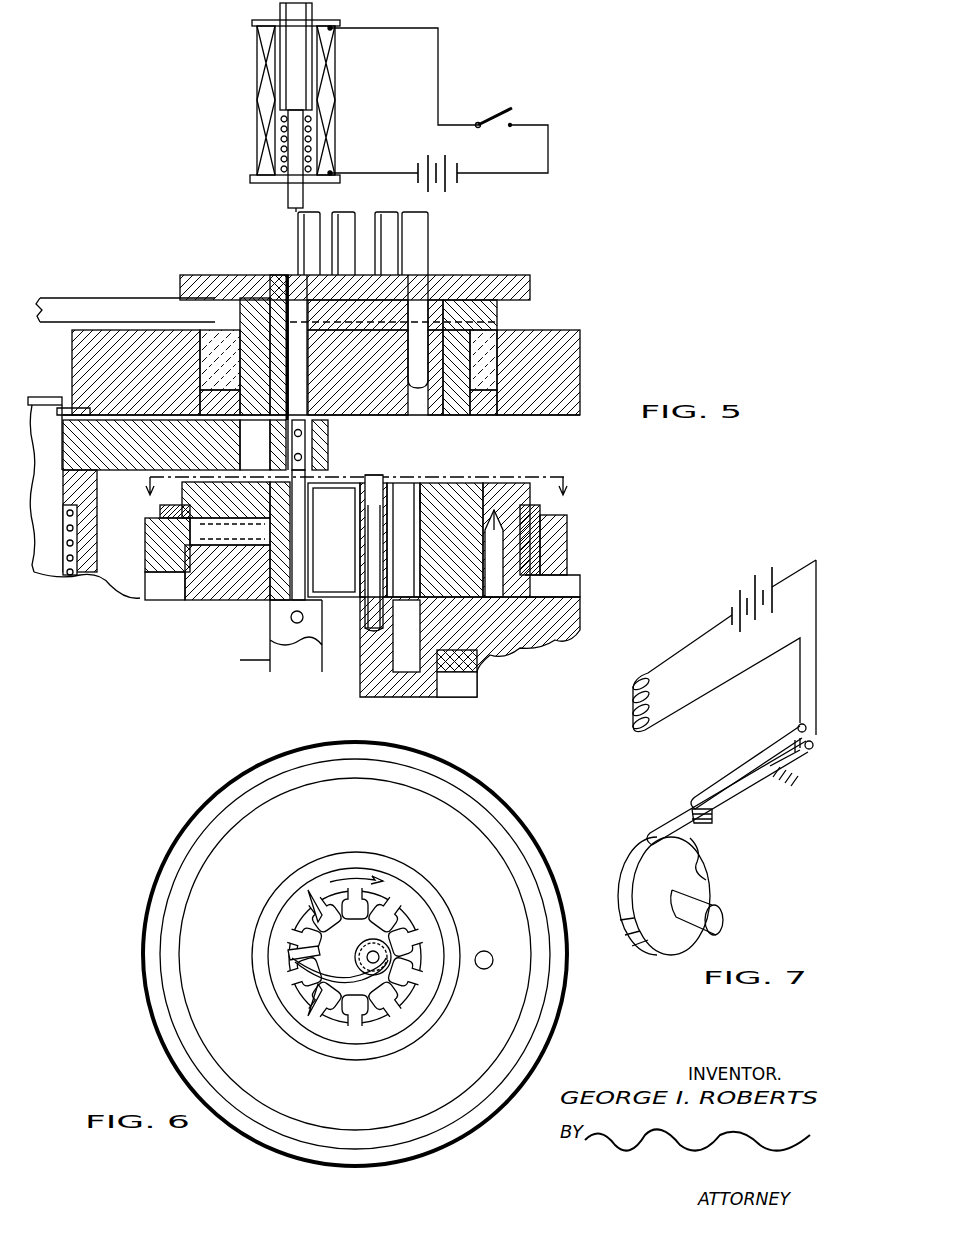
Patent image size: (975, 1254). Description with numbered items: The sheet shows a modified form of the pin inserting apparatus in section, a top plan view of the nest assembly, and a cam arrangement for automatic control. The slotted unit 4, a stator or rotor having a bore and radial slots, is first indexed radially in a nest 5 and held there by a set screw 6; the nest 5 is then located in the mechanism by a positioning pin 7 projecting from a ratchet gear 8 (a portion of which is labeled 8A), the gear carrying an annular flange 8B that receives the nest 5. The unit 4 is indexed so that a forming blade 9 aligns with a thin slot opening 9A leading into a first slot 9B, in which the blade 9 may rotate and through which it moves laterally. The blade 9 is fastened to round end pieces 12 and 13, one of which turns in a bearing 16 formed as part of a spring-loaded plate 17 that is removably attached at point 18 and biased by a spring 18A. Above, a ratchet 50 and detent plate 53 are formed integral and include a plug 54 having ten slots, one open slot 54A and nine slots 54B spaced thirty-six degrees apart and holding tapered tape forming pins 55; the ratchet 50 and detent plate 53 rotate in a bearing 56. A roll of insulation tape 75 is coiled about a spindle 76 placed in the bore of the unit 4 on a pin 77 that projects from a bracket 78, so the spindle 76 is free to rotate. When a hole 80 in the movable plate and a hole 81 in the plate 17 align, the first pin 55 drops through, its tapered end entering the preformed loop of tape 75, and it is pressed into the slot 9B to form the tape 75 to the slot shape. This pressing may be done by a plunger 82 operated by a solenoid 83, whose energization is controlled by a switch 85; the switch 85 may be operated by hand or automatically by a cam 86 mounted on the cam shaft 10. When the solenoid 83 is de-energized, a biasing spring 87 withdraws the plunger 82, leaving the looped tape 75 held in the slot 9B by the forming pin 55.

In FIG. 5, the slotted unit 4 is at (445, 490).
In FIG. 6, the slotted unit 4 is at (432, 932).
In FIG. 5, the nest 5 is at (520, 490).
In FIG. 5, the set screw 6 is at (200, 530).
In FIG. 5, the positioning pin 7 is at (498, 490).
In FIG. 6, the positioning pin 7 is at (491, 952).
In FIG. 5, the ratchet gear 8 is at (520, 630).
In FIG. 5, the base recess 8A is at (565, 585).
In FIG. 5, the annular flange 8B is at (545, 512).
In FIG. 6, the annular flange 8B is at (518, 868).
In FIG. 5, the forming blade 9 is at (305, 532).
In FIG. 6, the forming blade 9 is at (290, 962).
In FIG. 5, the thin slot opening 9A is at (313, 505).
In FIG. 6, the thin slot opening 9A is at (318, 922).
In FIG. 5, the first slot 9B is at (420, 490).
In FIG. 6, the first slot 9B is at (360, 888).
In FIG. 7, the cam shaft 10 is at (714, 905).
In FIG. 5, the round end piece 12 is at (270, 628).
In FIG. 5, the round end piece 13 is at (305, 460).
In FIG. 5, the bearing 16 is at (328, 434).
In FIG. 5, the spring-loaded plate 17 is at (140, 435).
In FIG. 5, the point 18 is at (45, 395).
In FIG. 5, the spring 18A is at (80, 540).
In FIG. 5, the ratchet 50 is at (493, 316).
In FIG. 5, the detent plate 53 is at (528, 288).
In FIG. 5, the plug 54 is at (285, 290).
In FIG. 5, the open slot 54A is at (293, 275).
In FIG. 5, the slots 54B is at (430, 276).
In FIG. 5, the tape forming pins 55 is at (420, 230).
In FIG. 5, the bearing 56 is at (495, 366).
In FIG. 6, the insulation tape 75 is at (328, 965).
In FIG. 5, the spindle 76 is at (372, 478).
In FIG. 6, the spindle 76 is at (377, 955).
In FIG. 5, the pin 77 is at (368, 552).
In FIG. 5, the bracket 78 is at (362, 680).
In FIG. 5, the hole 80 is at (302, 400).
In FIG. 5, the hole 81 is at (245, 428).
In FIG. 5, the plunger 82 is at (300, 75).
In FIG. 5, the solenoid 83 is at (260, 88).
In FIG. 7, the solenoid 83 is at (630, 705).
In FIG. 5, the switch 85 is at (488, 120).
In FIG. 7, the switch 85 is at (725, 772).
In FIG. 7, the cam 86 is at (700, 870).
In FIG. 5, the biasing spring 87 is at (285, 135).